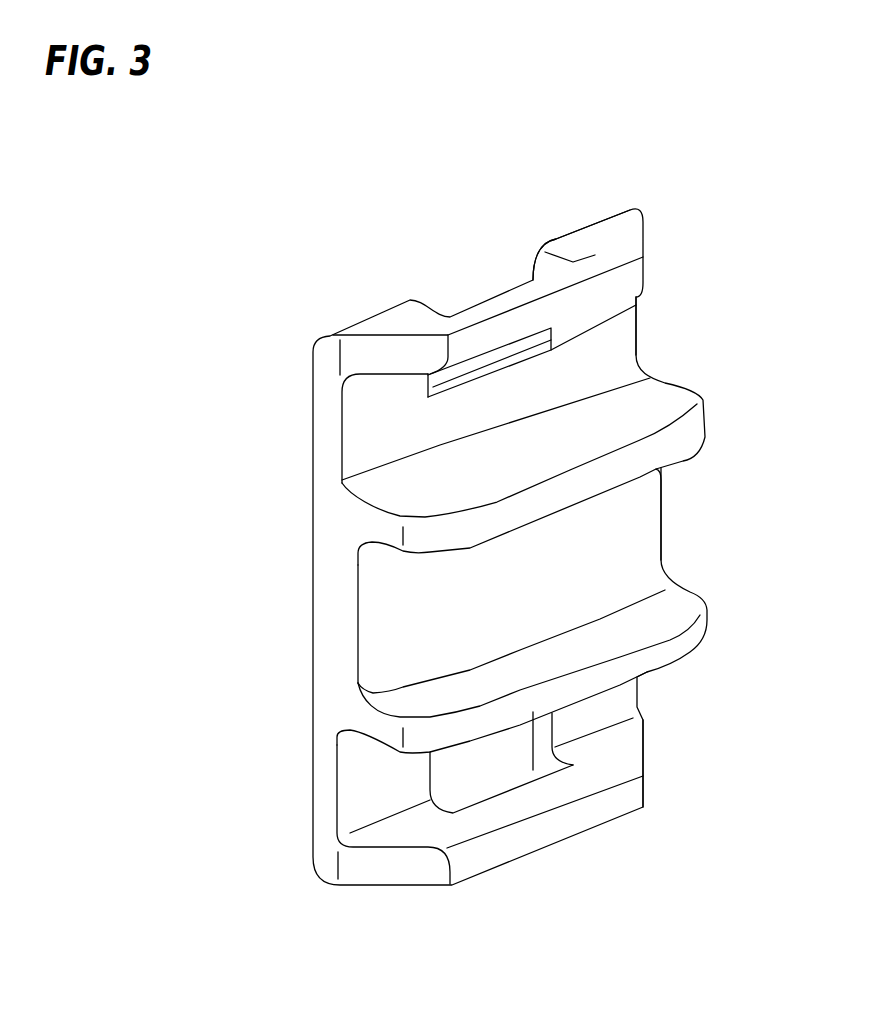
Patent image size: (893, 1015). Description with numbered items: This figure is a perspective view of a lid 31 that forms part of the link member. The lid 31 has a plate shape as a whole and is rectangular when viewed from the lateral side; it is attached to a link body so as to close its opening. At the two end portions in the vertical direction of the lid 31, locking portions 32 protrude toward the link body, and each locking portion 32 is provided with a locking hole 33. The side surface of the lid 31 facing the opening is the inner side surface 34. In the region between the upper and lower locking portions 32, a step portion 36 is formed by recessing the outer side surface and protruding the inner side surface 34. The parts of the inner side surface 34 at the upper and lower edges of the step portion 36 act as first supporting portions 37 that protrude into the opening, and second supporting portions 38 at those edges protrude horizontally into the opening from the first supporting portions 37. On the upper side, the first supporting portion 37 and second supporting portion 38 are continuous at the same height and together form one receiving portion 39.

The lid 31 is at (323, 442).
The locking portion 32 is at (612, 289).
The locking hole 33 is at (493, 363).
The inner side surface 34 is at (607, 335).
The step portion 36 is at (640, 527).
The first supporting portion 37 is at (382, 489).
The second supporting portion 38 is at (423, 537).
The receiving portion 39 is at (222, 545).